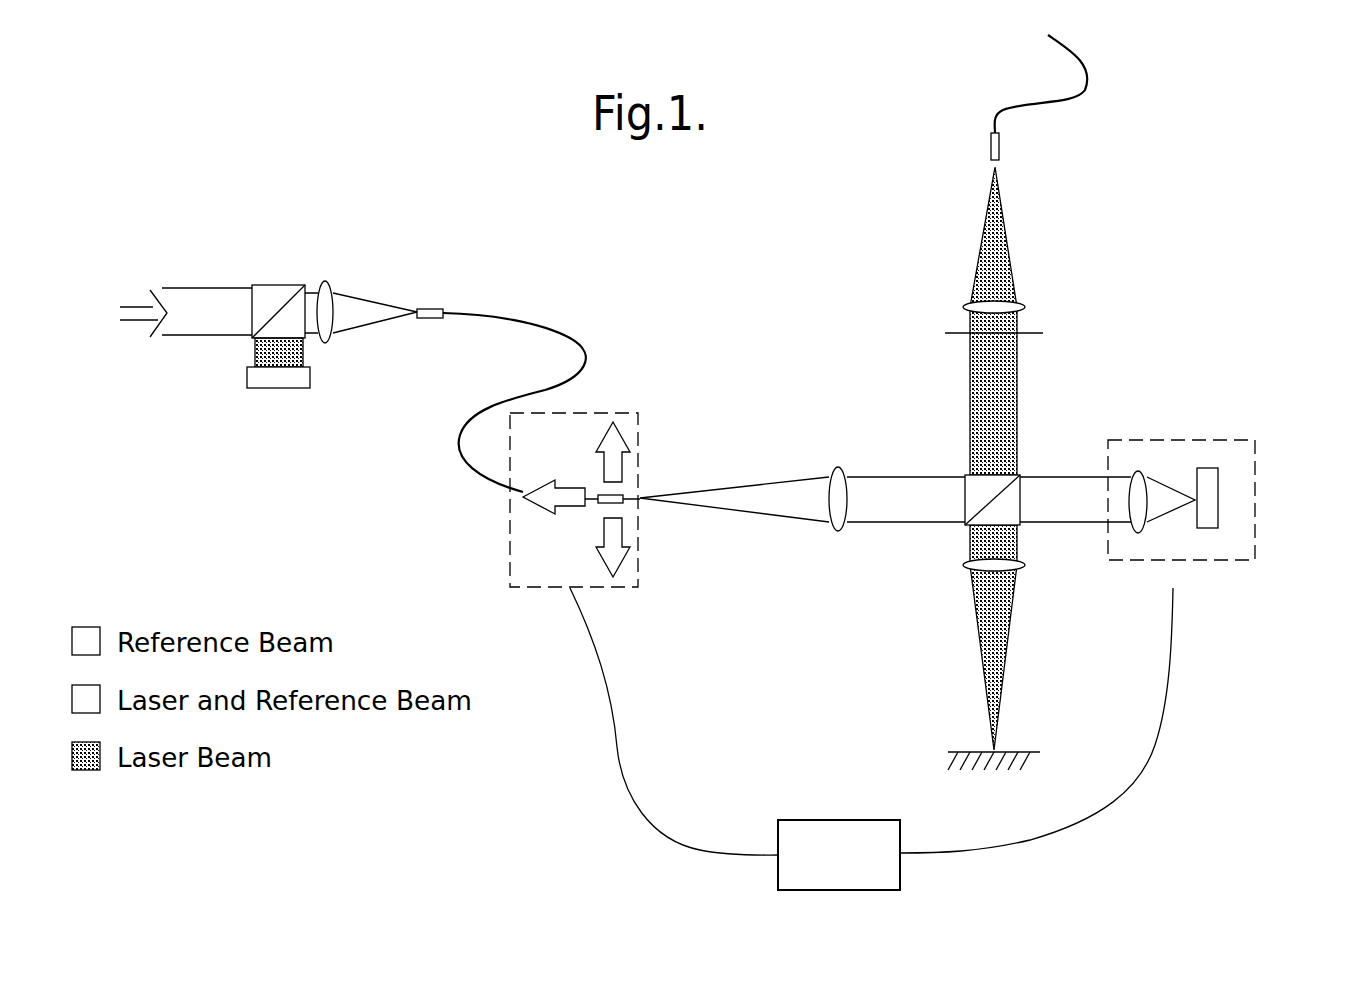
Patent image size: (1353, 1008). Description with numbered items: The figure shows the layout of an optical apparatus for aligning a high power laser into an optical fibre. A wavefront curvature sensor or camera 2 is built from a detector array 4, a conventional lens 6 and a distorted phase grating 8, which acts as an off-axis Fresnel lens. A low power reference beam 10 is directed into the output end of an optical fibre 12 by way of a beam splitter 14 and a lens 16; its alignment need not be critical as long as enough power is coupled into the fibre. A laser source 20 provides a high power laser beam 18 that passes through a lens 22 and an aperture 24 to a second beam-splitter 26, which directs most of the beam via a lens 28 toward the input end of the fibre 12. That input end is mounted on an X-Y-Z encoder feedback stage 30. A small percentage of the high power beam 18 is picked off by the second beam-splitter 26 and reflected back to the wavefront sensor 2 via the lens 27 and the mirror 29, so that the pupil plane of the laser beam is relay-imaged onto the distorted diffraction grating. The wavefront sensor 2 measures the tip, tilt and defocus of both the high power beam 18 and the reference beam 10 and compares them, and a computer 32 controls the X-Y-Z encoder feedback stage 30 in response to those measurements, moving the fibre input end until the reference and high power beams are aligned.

The wavefront curvature sensor 2 is at (1213, 484).
The detector array 4 is at (1218, 483).
The lens 6 is at (1138, 468).
The distorted phase grating 8 is at (1112, 448).
The reference beam 10 is at (207, 287).
The optical fibre 12 is at (567, 337).
The beam splitter 14 is at (280, 282).
The lens 16 is at (333, 287).
The high power laser beam 18 is at (1010, 230).
The laser source 20 is at (1008, 137).
The lens 22 is at (1022, 307).
The aperture 24 is at (1052, 337).
The second beam-splitter 26 is at (962, 470).
The lens 27 is at (1020, 567).
The lens 28 is at (835, 470).
The mirror 29 is at (1017, 745).
The X-Y-Z encoder feedback stage 30 is at (620, 488).
The computer 32 is at (871, 739).